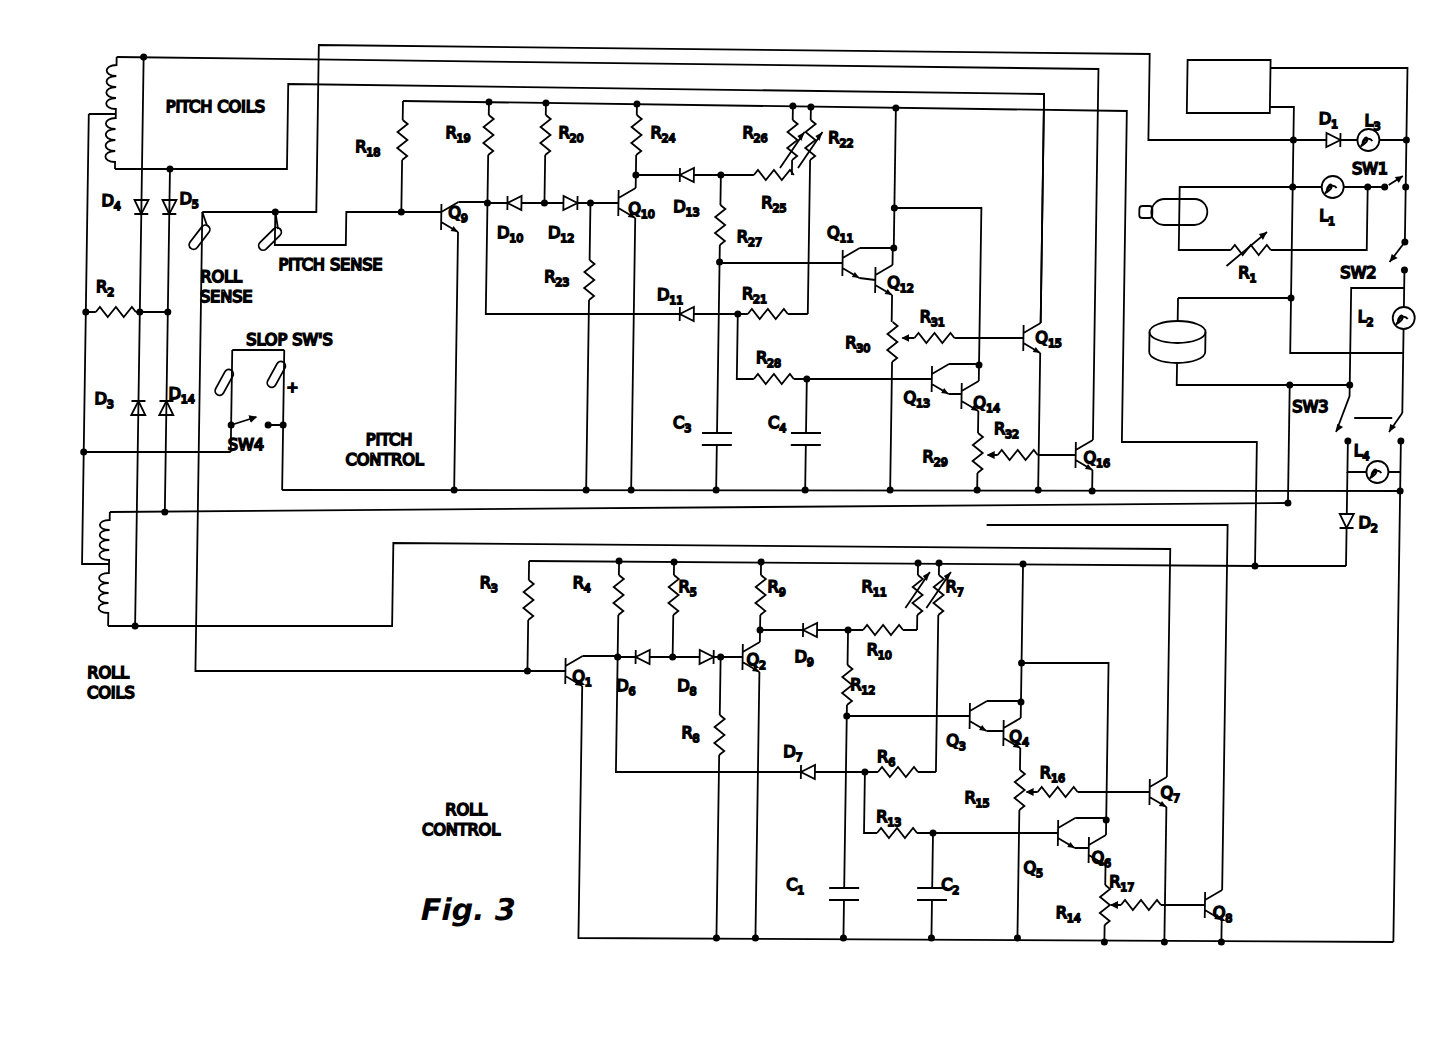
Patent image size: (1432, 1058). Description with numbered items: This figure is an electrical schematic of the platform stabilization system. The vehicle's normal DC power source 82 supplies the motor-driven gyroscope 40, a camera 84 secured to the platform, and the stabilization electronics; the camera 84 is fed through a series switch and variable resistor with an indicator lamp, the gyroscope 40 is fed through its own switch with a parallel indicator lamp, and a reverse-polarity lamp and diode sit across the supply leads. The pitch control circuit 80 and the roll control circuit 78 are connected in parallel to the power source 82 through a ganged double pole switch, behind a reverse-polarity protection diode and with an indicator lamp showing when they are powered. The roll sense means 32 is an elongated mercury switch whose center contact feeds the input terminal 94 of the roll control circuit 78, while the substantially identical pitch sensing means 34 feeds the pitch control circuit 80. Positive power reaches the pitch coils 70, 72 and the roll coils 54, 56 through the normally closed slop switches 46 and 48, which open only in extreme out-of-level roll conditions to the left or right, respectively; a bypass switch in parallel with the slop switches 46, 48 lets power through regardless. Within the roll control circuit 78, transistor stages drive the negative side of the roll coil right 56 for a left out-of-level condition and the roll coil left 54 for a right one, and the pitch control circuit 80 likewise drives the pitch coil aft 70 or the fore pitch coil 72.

The pitch coil 72 is at (118, 86).
The pitch coil aft 70 is at (118, 133).
The roll sense means 32 is at (210, 231).
The pitch sensing means 34 is at (283, 232).
The roll slop switch 46 is at (228, 370).
The slop switch 48 is at (286, 364).
The roll coil left 54 is at (107, 520).
The roll coil right 56 is at (107, 616).
The pitch control circuit 80 is at (488, 391).
The roll control circuit 78 is at (598, 797).
The DC power source 82 is at (1222, 112).
The camera 84 is at (1170, 225).
The gyroscope 40 is at (1171, 354).
The input terminal 94 is at (487, 679).